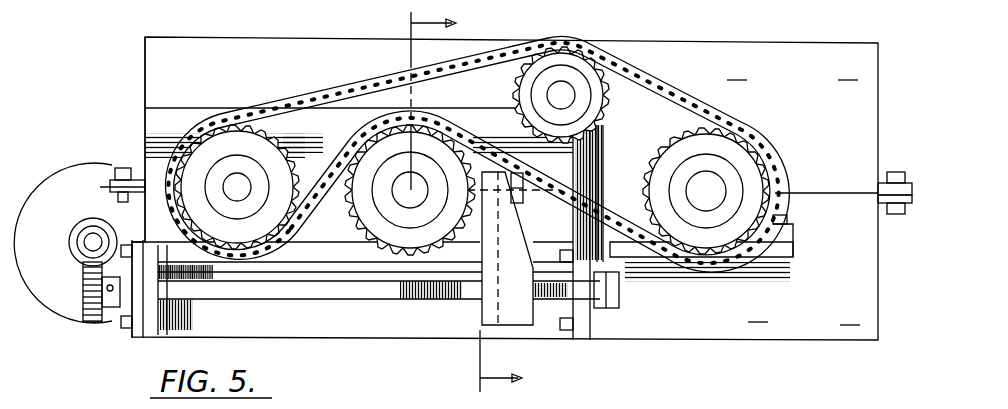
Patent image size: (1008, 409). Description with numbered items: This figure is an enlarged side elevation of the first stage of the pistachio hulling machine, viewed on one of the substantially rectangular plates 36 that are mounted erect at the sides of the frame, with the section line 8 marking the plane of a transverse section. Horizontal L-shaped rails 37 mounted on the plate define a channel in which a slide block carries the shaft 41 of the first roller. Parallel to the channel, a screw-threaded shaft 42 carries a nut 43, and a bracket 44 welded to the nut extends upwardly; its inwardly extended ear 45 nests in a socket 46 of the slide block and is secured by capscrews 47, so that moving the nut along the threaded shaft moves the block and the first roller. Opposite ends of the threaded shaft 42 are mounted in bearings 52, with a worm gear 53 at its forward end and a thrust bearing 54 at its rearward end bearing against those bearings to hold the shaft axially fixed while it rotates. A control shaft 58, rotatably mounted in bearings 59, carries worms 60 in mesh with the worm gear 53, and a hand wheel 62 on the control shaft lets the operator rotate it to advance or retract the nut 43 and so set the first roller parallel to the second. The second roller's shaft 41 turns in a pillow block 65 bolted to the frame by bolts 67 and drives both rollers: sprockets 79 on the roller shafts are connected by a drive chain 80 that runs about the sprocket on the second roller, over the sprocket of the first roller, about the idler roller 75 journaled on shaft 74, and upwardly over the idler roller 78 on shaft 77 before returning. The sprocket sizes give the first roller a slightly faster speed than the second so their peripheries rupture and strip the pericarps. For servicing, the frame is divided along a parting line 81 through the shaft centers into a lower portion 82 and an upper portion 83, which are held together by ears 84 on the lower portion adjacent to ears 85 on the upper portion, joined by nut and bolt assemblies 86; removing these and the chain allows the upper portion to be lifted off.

The section line 8- 8 is at (456, 200).
The rectangular plates 36 is at (772, 58).
The L-shaped rails 37 is at (345, 117).
The roller shaft 41 is at (397, 195).
The screw-threaded shaft 42 is at (300, 290).
The nut 43 is at (465, 304).
The bracket 44 is at (510, 307).
The ear 45 is at (410, 190).
The socket 46 is at (495, 222).
The capscrews 47 is at (560, 178).
The bearings 52 is at (128, 313).
The worm gear 53 is at (85, 276).
The thrust bearing 54 is at (617, 302).
The control shaft 58 is at (95, 240).
The bearings 59 is at (70, 232).
The worms 60 is at (70, 245).
The hand wheel 62 is at (83, 170).
The pillow block 65 is at (790, 233).
The bolts 67 is at (787, 215).
The shaft 74 is at (232, 182).
The idler roller 75 is at (200, 155).
The shaft 77 is at (562, 90).
The idler roller 78 is at (558, 60).
The sprockets 79 is at (425, 140).
The drive chain 80 is at (322, 97).
The parting line 81 is at (822, 193).
The lower portion 82 is at (804, 313).
The upper portion 83 is at (792, 70).
The ears 84 is at (100, 192).
The ears 85 is at (113, 170).
The nut and bolt assemblies 86 is at (127, 167).